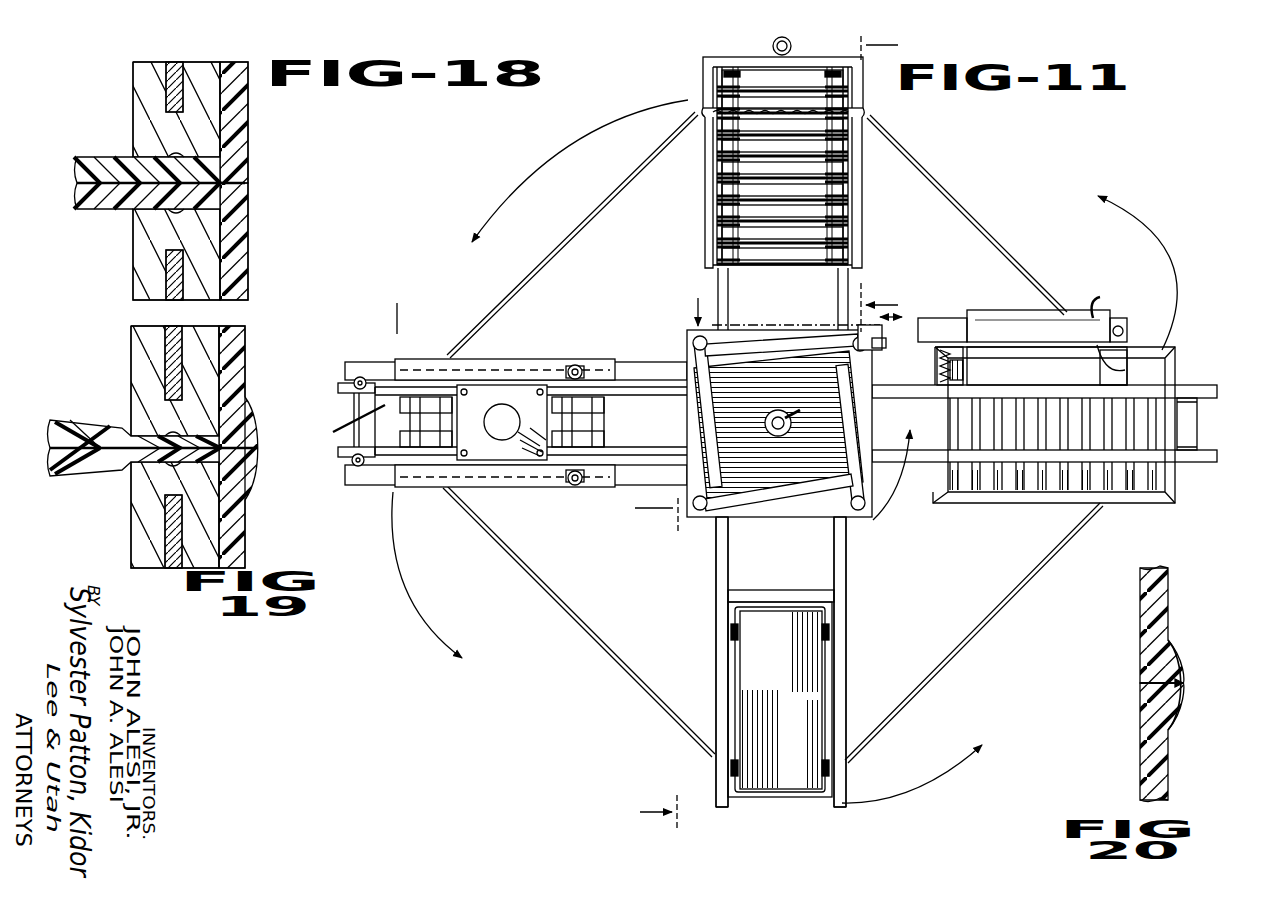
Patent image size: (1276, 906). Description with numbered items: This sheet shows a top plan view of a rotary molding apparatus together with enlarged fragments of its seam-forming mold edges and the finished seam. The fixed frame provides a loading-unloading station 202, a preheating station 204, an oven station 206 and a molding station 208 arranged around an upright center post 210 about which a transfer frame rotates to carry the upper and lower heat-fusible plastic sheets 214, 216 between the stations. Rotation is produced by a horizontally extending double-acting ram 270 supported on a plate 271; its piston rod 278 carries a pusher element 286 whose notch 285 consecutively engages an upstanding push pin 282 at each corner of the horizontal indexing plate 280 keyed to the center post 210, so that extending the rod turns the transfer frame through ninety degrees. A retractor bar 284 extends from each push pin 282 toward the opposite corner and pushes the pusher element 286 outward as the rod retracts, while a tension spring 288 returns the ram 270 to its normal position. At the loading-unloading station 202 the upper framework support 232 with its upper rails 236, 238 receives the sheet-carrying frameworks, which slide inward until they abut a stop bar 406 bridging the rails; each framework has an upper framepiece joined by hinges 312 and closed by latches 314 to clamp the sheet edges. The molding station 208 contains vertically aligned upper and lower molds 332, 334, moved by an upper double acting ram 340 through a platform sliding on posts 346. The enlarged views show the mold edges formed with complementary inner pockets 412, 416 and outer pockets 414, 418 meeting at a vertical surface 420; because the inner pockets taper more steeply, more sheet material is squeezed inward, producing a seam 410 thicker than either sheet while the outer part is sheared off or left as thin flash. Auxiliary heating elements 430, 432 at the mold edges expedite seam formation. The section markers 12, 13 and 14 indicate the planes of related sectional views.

In FIG. 11, the section line 12- 12 is at (650, 666).
In FIG. 11, the section line 13- 13 is at (899, 184).
In FIG. 11, the section line 14- 14 is at (547, 316).
In FIG. 11, the loading-unloading station 202 is at (770, 673).
In FIG. 11, the preheating station 204 is at (1058, 385).
In FIG. 11, the oven station 206 is at (900, 221).
In FIG. 11, the molding station 208 is at (482, 405).
In FIG. 11, the center post 210 is at (749, 418).
In FIG. 18, the upper plastic sheet 214 is at (247, 150).
In FIG. 19, the upper plastic sheet 214 is at (247, 380).
In FIG. 20, the upper plastic sheet 214 is at (1168, 638).
In FIG. 18, the lower plastic sheet 216 is at (247, 245).
In FIG. 19, the lower plastic sheet 216 is at (247, 538).
In FIG. 20, the lower plastic sheet 216 is at (1168, 735).
In FIG. 11, the upper framework support 232 is at (840, 690).
In FIG. 11, the upper rail 236 is at (722, 608).
In FIG. 11, the upper rail 238 is at (840, 664).
In FIG. 11, the double-acting ram 270 is at (1013, 323).
In FIG. 11, the plate 271 is at (1098, 305).
In FIG. 11, the piston rod 278 is at (925, 325).
In FIG. 11, the indexing plate 280 is at (690, 500).
In FIG. 11, the push pin 282 is at (706, 340).
In FIG. 11, the retractor bar 284 is at (716, 392).
In FIG. 11, the notch 285 is at (882, 345).
In FIG. 11, the pusher element 286 is at (862, 328).
In FIG. 11, the tension spring 288 is at (962, 372).
In FIG. 11, the hinge 312 is at (829, 628).
In FIG. 11, the latch 314 is at (731, 632).
In FIG. 18, the upper mold 332 is at (140, 88).
In FIG. 19, the upper mold 332 is at (137, 385).
In FIG. 18, the lower mold 334 is at (137, 258).
In FIG. 19, the lower mold 334 is at (137, 498).
In FIG. 11, the upper double acting ram 340 is at (506, 416).
In FIG. 11, the post 346 is at (362, 380).
In FIG. 11, the stop bar 406 is at (763, 595).
In FIG. 19, the seam 410 is at (243, 473).
In FIG. 20, the seam 410 is at (1168, 677).
In FIG. 18, the inner pocket 412 is at (247, 157).
In FIG. 19, the inner pocket 412 is at (256, 434).
In FIG. 18, the outer pocket 414 is at (127, 157).
In FIG. 19, the outer pocket 414 is at (127, 437).
In FIG. 18, the inner pocket 416 is at (248, 188).
In FIG. 19, the inner pocket 416 is at (258, 457).
In FIG. 18, the outer pocket 418 is at (127, 208).
In FIG. 19, the outer pocket 418 is at (124, 472).
In FIG. 18, the vertical surface 420 is at (172, 157).
In FIG. 19, the vertical surface 420 is at (178, 433).
In FIG. 18, the auxiliary heating element 430 is at (176, 70).
In FIG. 19, the auxiliary heating element 430 is at (136, 352).
In FIG. 18, the auxiliary heating element 432 is at (175, 298).
In FIG. 19, the auxiliary heating element 432 is at (172, 537).